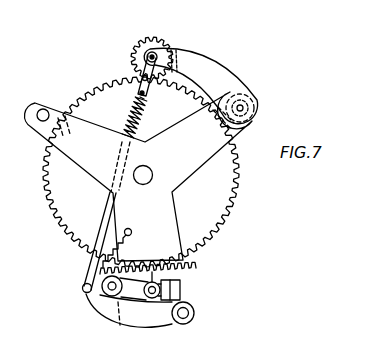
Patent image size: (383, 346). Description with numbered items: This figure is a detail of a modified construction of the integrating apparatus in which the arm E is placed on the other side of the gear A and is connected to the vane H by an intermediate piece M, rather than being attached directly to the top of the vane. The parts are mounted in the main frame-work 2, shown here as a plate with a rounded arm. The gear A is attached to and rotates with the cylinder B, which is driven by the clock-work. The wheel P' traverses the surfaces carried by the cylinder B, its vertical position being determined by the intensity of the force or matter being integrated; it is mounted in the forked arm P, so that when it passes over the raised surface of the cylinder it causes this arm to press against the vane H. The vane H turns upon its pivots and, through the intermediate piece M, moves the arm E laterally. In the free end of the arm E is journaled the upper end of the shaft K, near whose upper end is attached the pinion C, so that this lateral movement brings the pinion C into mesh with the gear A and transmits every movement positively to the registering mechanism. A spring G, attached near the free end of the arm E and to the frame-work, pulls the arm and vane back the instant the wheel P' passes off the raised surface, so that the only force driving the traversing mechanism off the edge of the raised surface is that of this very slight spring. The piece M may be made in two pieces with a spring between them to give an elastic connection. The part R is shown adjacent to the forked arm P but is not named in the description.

The gear A is at (104, 82).
The main frame-work 2 is at (138, 176).
The cylinder B is at (175, 188).
The pinion C is at (163, 23).
The shaft K is at (146, 57).
The arm E is at (200, 85).
The intermediate piece M is at (110, 198).
The spring G is at (119, 261).
The forked arm P is at (131, 286).
The block R is at (181, 292).
The vane H is at (140, 312).
The wheel P' is at (70, 309).